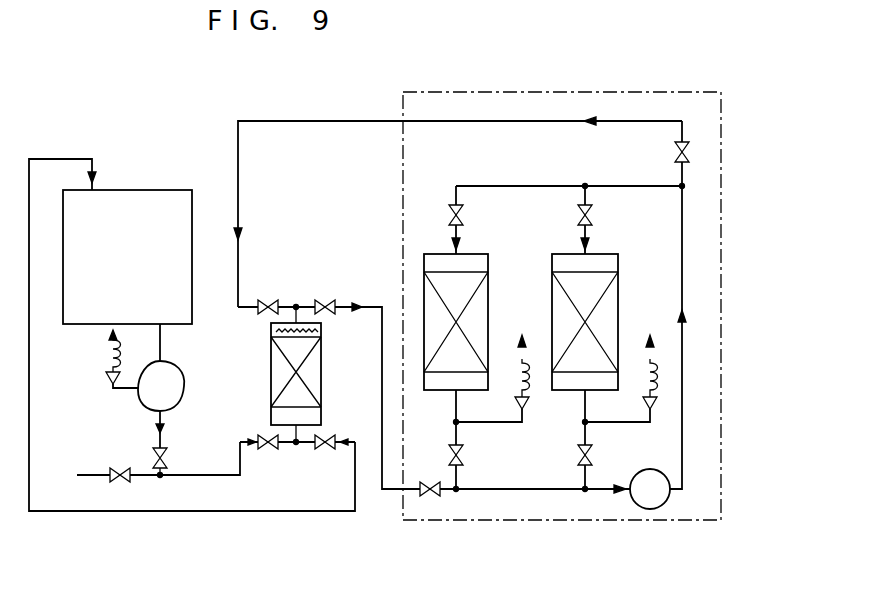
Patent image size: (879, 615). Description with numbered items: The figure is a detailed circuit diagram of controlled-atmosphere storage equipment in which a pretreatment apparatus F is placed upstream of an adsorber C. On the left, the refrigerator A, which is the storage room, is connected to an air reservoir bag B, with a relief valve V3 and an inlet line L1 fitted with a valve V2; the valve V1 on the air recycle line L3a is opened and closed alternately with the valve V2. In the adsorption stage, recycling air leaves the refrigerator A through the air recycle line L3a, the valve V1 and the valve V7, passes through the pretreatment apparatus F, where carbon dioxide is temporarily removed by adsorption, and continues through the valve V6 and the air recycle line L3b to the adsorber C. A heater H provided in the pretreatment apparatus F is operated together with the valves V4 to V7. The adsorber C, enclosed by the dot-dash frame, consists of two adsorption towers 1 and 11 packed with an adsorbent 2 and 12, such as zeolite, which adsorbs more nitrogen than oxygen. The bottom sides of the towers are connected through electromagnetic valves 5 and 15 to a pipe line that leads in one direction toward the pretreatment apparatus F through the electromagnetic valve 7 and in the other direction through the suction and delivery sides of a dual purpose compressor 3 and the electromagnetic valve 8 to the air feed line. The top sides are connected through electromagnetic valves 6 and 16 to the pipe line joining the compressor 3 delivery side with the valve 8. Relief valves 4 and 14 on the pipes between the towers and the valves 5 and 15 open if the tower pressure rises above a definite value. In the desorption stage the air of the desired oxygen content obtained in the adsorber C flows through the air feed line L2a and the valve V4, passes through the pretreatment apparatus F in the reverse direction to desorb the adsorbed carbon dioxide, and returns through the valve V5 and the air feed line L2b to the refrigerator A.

The adsorption tower 1 is at (512, 272).
The adsorbent 2 is at (486, 304).
The dual purpose compressor 3 is at (650, 509).
The relief valve 4 is at (526, 410).
The electromagnetic valve 5 is at (463, 455).
The electromagnetic valve 6 is at (463, 215).
The electromagnetic valve 7 is at (430, 483).
The electromagnetic valve 8 is at (675, 157).
The adsorption tower 11 is at (640, 272).
The adsorbent 12 is at (616, 304).
The relief valve 14 is at (652, 410).
The electromagnetic valve 15 is at (587, 455).
The electromagnetic valve 16 is at (587, 215).
The refrigerator A is at (137, 190).
The air reservoir bag B is at (138, 399).
The adsorber C is at (483, 92).
The pretreatment apparatus F is at (271, 359).
The heater H is at (321, 332).
The valve V1 is at (166, 456).
The valve V2 is at (120, 481).
The relief valve V3 is at (110, 381).
The valve V4 is at (270, 298).
The valve V5 is at (322, 446).
The valve V6 is at (327, 298).
The valve V7 is at (266, 446).
The inlet line L1 is at (158, 478).
The air feed line L2a is at (301, 121).
The air feed line L2b is at (231, 511).
The air recycle line L3a is at (164, 433).
The air recycle line L3b is at (382, 402).